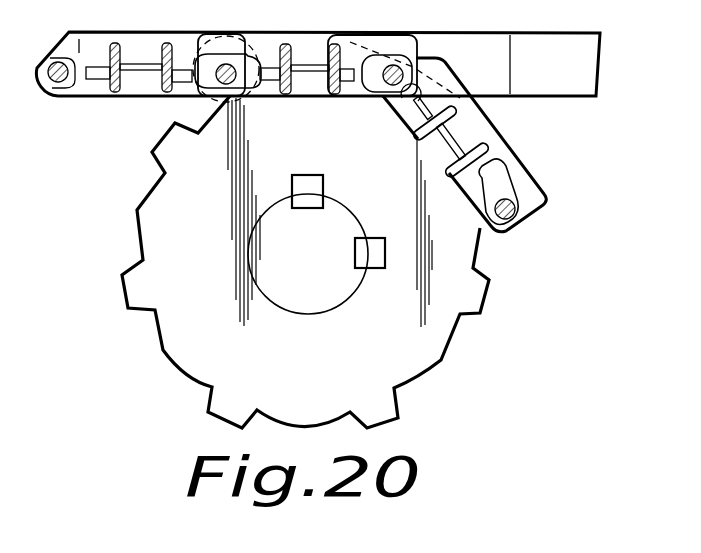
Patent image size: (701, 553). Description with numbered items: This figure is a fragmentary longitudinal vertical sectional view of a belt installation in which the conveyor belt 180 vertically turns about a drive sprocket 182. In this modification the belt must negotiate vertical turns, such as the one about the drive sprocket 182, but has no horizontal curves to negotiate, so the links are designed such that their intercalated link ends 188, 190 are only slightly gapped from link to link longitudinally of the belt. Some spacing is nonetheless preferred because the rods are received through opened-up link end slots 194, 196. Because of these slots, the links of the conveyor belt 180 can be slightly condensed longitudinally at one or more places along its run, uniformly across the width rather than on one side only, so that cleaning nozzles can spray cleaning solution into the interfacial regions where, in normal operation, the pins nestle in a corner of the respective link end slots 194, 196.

The conveyor belt 180 is at (192, 29).
The drive sprocket 182 is at (427, 361).
The link end 188 is at (208, 64).
The link end 190 is at (247, 57).
The link end slot 194 is at (72, 84).
The link end slot 196 is at (198, 82).